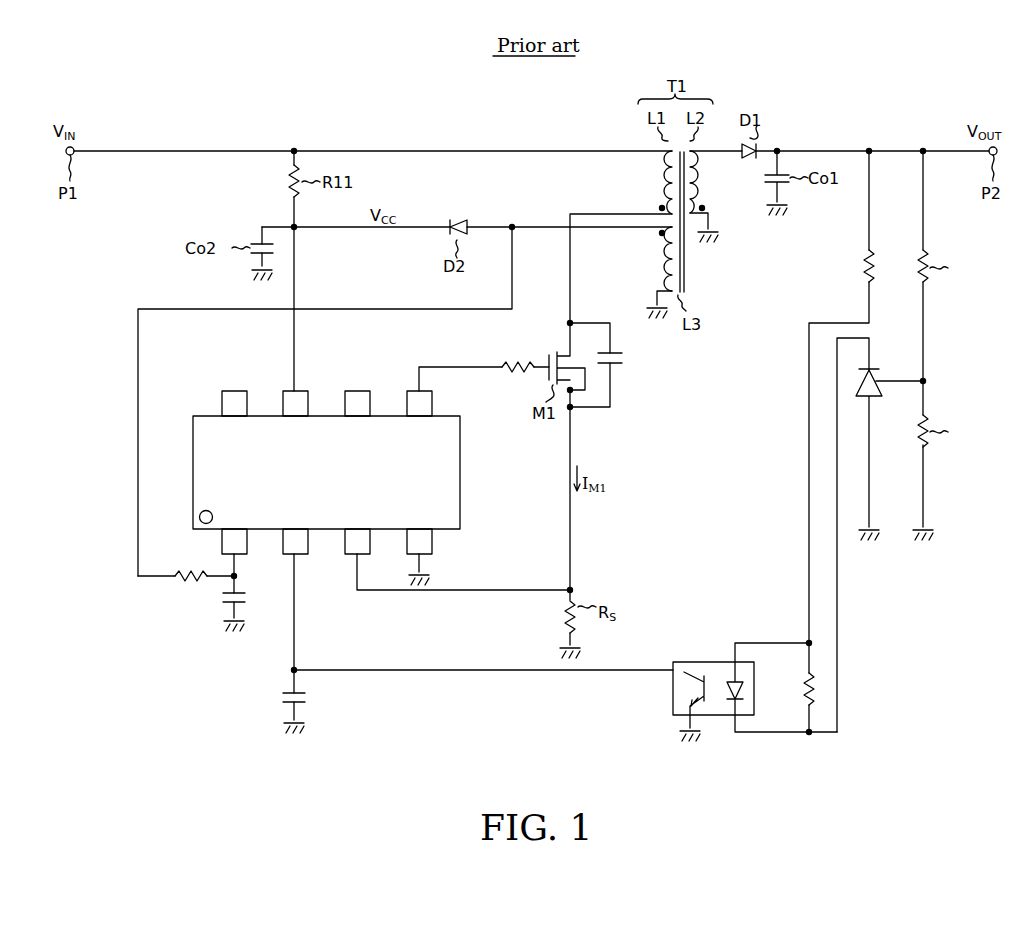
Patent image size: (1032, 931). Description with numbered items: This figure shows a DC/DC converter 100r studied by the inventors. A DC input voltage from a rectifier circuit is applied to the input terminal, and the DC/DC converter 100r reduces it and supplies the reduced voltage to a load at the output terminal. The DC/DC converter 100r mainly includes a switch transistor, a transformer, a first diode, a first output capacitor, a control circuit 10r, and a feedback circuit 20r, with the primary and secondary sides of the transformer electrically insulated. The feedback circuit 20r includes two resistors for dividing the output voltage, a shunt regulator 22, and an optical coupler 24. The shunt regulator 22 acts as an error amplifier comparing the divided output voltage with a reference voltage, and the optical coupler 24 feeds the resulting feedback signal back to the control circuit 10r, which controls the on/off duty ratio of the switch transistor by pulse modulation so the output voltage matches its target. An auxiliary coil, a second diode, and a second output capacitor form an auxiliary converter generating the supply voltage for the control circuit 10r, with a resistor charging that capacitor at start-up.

The control circuit 10r is at (461, 492).
The feedback circuit 20r is at (795, 468).
The shunt regulator 22 is at (877, 398).
The optical coupler 24 is at (728, 692).
The DC/DC converter 100r is at (590, 789).